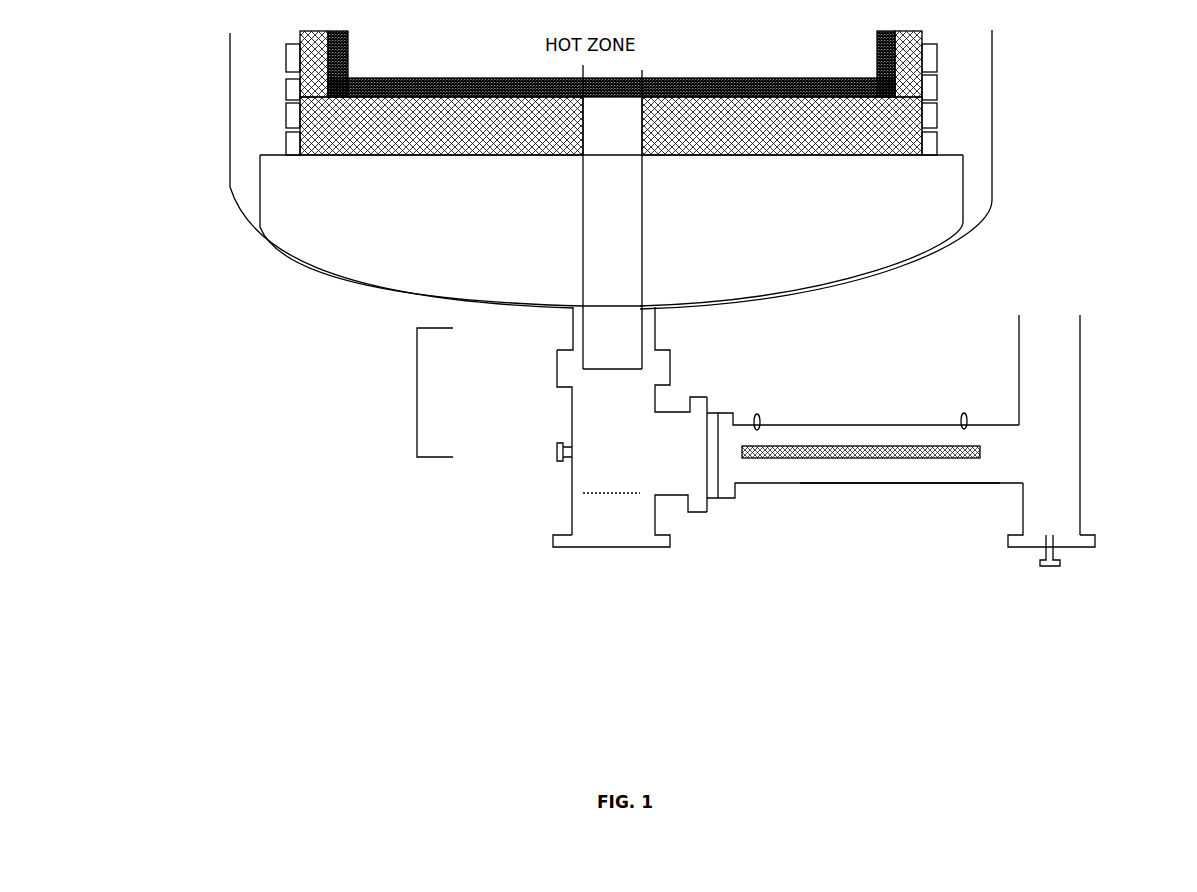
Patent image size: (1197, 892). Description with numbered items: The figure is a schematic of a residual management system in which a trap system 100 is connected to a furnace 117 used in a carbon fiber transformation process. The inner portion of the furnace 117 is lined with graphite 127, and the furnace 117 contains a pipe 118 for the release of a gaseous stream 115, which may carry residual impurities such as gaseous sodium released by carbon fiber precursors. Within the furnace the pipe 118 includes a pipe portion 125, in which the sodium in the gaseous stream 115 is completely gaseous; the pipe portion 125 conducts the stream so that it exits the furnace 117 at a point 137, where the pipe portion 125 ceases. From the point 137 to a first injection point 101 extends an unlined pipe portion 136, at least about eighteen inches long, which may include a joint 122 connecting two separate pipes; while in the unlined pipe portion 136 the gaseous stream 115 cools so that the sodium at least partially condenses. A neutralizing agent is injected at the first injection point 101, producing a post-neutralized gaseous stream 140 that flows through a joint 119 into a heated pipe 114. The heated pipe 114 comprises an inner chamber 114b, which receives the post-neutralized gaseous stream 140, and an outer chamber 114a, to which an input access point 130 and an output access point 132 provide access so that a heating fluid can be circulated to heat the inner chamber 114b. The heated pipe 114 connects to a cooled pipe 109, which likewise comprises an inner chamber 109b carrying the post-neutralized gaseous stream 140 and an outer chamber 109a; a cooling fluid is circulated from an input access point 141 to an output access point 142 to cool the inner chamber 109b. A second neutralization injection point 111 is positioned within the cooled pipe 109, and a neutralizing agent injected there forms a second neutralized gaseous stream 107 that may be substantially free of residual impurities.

The trap system 100 is at (192, 153).
The furnace 117 is at (997, 57).
The graphite 127 is at (737, 74).
The pipe portion 125 is at (587, 108).
The gaseous stream 115 is at (610, 398).
The second neutralized gaseous stream 107 is at (1048, 375).
The pipe 118 is at (568, 333).
The joint 122 is at (553, 370).
The joint 119 is at (712, 398).
The point 137 is at (658, 312).
The input access point 130 is at (757, 412).
The output access point 132 is at (964, 411).
The input access point 141 is at (1083, 338).
The unlined pipe portion 136 is at (413, 397).
The inner chamber 109b is at (1062, 391).
The outer chamber 109a is at (1083, 434).
The first injection point 101 is at (553, 454).
The post-neutralized gaseous stream 140 is at (698, 452).
The cooled pipe 109 is at (1083, 473).
The output access point 142 is at (1083, 512).
The inner chamber 114b is at (772, 462).
The outer chamber 114a is at (850, 487).
The heated pipe 114 is at (920, 487).
The second neutralization injection point 111 is at (1050, 570).